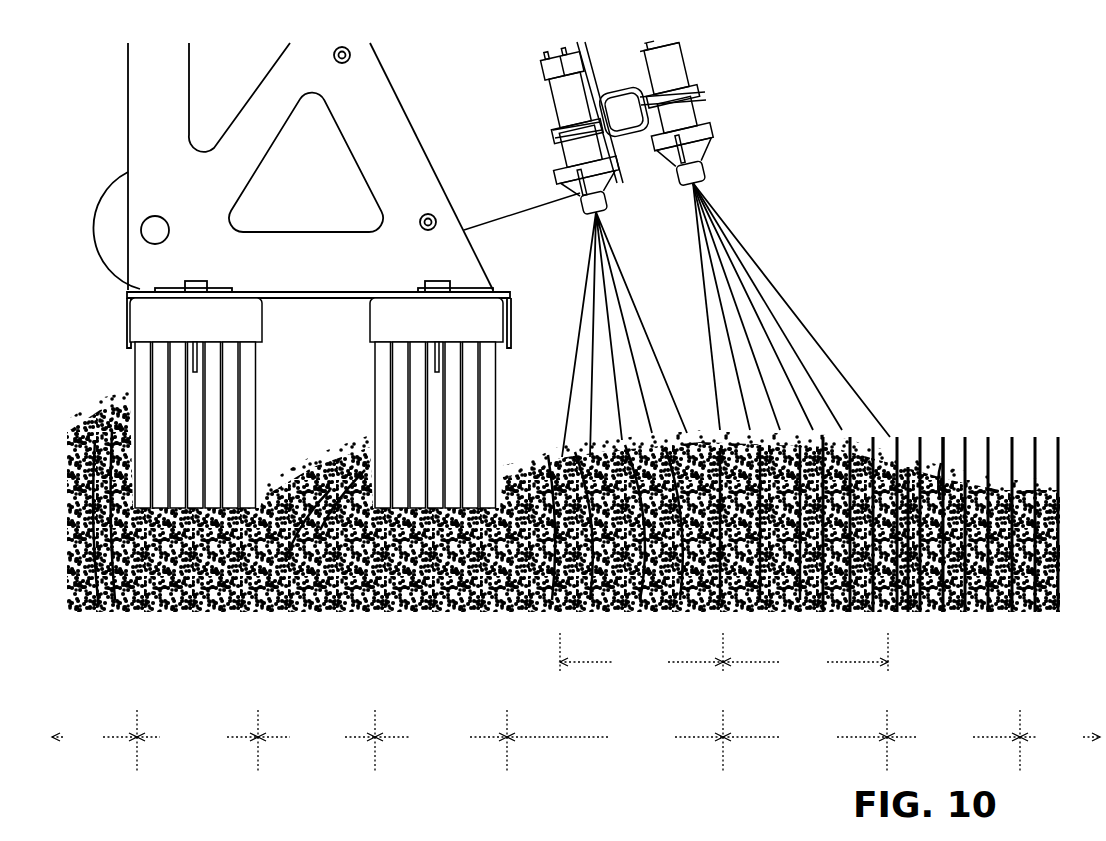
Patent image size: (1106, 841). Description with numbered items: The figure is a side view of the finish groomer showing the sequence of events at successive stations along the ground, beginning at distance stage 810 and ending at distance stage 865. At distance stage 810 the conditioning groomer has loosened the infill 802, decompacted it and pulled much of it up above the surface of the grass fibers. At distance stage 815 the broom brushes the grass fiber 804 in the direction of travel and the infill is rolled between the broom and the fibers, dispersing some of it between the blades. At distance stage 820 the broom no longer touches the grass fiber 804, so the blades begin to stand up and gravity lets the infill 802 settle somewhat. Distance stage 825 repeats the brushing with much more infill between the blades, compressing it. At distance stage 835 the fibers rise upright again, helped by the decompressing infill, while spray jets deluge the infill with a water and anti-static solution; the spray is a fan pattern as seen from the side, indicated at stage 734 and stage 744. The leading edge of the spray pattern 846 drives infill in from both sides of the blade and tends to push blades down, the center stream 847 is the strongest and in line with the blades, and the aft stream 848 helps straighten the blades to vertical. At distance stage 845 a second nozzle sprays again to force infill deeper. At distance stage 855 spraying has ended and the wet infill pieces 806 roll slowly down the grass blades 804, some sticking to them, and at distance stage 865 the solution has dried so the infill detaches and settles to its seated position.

The infill 802 is at (908, 467).
The grass fiber 804 is at (943, 437).
The infill pieces 806 is at (941, 463).
The leading edge of spray pattern 846 is at (720, 308).
The center of spray pattern 847 is at (750, 308).
The aft end of spray pattern 848 is at (784, 308).
The spray fan stage 734 is at (641, 662).
The spray fan stage 744 is at (805, 662).
The distance stage 810 is at (94, 737).
The distance stage 815 is at (197, 737).
The distance stage 820 is at (316, 737).
The distance stage 825 is at (441, 737).
The distance stage 835 is at (615, 737).
The distance stage 845 is at (805, 737).
The distance stage 855 is at (953, 737).
The distance stage 865 is at (1060, 737).